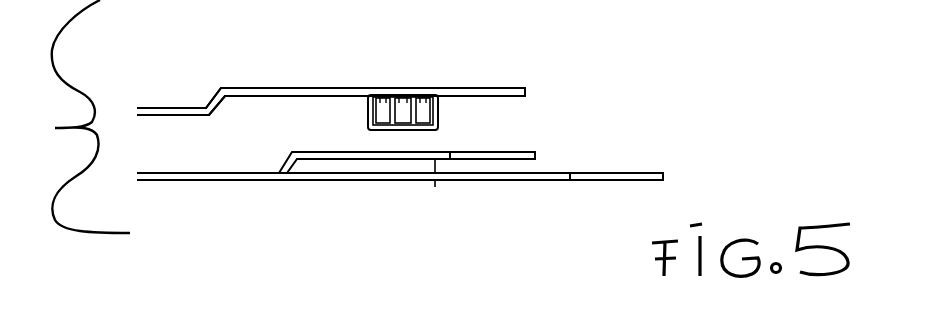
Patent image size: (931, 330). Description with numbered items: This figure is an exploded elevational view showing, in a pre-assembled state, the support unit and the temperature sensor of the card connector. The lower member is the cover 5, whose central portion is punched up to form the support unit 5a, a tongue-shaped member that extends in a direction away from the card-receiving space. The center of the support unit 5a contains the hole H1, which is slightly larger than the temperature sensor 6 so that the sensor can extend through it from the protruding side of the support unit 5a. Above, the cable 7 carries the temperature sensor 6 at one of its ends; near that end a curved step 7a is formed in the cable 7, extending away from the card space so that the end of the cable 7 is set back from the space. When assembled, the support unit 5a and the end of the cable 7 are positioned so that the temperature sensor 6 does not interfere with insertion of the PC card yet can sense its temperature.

The cover 5 is at (627, 173).
The support unit 5a is at (516, 152).
The temperature sensor 6 is at (440, 108).
The cable 7 is at (308, 88).
The step 7a is at (212, 100).
The hole H1 is at (435, 158).